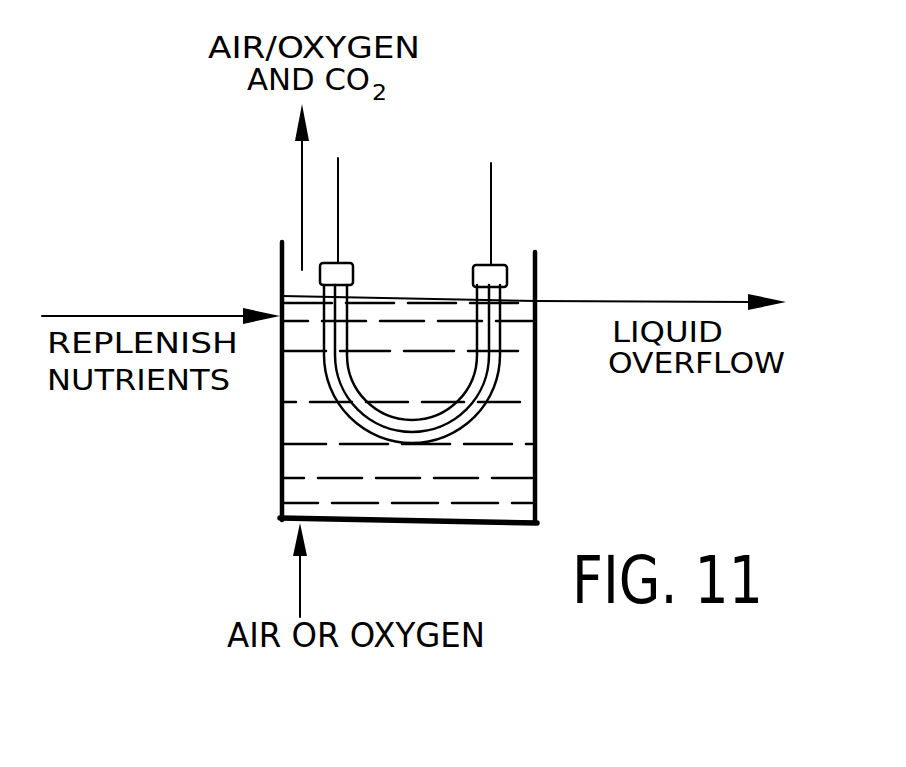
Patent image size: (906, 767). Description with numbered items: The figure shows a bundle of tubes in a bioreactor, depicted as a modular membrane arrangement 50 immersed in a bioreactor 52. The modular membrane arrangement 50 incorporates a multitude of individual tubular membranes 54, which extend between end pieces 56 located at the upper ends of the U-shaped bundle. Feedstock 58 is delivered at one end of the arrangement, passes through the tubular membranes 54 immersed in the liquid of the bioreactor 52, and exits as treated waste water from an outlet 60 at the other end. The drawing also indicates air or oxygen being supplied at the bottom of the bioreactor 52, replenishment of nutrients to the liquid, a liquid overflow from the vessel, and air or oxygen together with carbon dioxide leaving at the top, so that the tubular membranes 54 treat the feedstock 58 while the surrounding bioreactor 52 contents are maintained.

The modular membrane arrangement 50 is at (417, 399).
The bioreactor 52 is at (313, 463).
The tubular membranes 54 is at (317, 378).
The end pieces 56 is at (338, 270).
The feedstock 58 is at (348, 146).
The outlet 60 is at (491, 163).